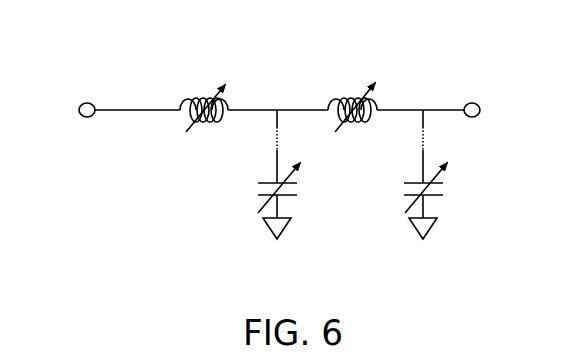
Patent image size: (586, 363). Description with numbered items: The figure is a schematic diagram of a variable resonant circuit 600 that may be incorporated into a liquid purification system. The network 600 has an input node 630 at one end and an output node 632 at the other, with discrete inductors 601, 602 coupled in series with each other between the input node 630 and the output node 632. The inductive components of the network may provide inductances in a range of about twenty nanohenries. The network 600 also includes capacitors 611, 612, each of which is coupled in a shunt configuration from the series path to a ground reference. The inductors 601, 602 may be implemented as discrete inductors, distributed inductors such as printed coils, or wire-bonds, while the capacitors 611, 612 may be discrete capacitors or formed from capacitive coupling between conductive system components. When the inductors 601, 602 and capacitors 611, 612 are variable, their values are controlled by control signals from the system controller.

The variable resonant circuit 600 is at (143, 77).
The first inductor 601 is at (205, 99).
The second inductor 602 is at (355, 98).
The first capacitor 611 is at (272, 181).
The second capacitor 612 is at (415, 181).
The input node 630 is at (85, 117).
The output node 632 is at (474, 117).